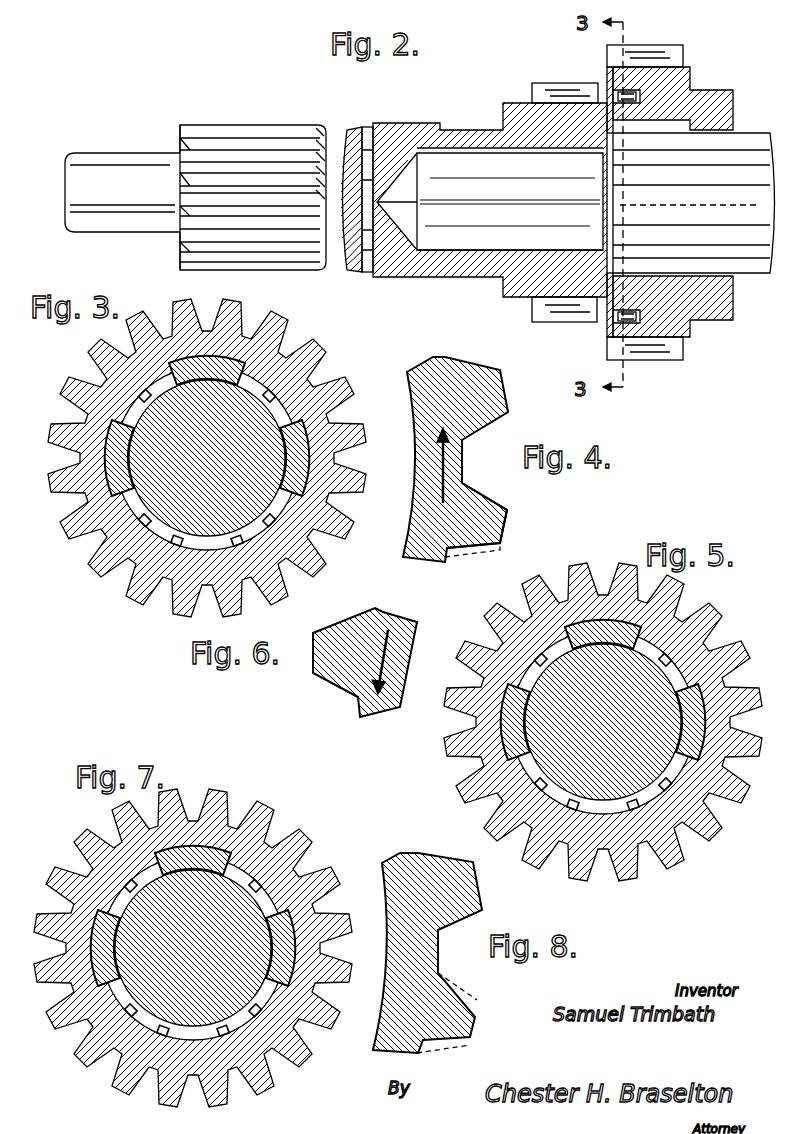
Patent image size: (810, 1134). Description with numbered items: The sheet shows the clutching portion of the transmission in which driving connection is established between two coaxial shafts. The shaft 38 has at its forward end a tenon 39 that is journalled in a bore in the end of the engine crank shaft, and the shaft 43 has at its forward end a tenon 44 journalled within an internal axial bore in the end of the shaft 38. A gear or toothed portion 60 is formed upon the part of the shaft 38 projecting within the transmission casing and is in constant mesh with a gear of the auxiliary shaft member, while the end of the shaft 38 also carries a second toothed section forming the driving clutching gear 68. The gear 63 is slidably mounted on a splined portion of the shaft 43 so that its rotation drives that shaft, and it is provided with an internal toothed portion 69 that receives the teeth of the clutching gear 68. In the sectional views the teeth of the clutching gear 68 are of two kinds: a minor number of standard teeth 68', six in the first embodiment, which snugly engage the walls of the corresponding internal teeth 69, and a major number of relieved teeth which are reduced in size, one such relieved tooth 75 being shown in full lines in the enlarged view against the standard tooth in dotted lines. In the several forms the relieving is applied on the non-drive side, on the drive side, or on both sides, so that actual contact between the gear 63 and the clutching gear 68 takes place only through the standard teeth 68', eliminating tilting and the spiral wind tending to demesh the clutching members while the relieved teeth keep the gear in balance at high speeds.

In FIG. 2, the shaft 38 is at (458, 137).
In FIG. 2, the tenon 39 is at (142, 172).
In FIG. 2, the shaft 43 is at (755, 245).
In FIG. 3, the shaft 43 is at (207, 458).
In FIG. 5, the shaft 43 is at (603, 722).
In FIG. 7, the shaft 43 is at (193, 948).
In FIG. 2, the tenon 44 is at (497, 218).
In FIG. 2, the gear or toothed portion 60 is at (560, 318).
In FIG. 2, the gear 63 is at (664, 352).
In FIG. 3, the gear 63 is at (207, 458).
In FIG. 5, the gear 63 is at (603, 722).
In FIG. 7, the gear 63 is at (193, 948).
In FIG. 2, the clutching gear 68 is at (603, 229).
In FIG. 3, the standard teeth 68' is at (219, 387).
In FIG. 4, the standard teeth 68' is at (476, 459).
In FIG. 5, the standard teeth 68' is at (654, 653).
In FIG. 7, the standard teeth 68' is at (225, 873).
In FIG. 2, the internal toothed portion 69 is at (640, 77).
In FIG. 4, the relieved tooth 75 is at (478, 555).